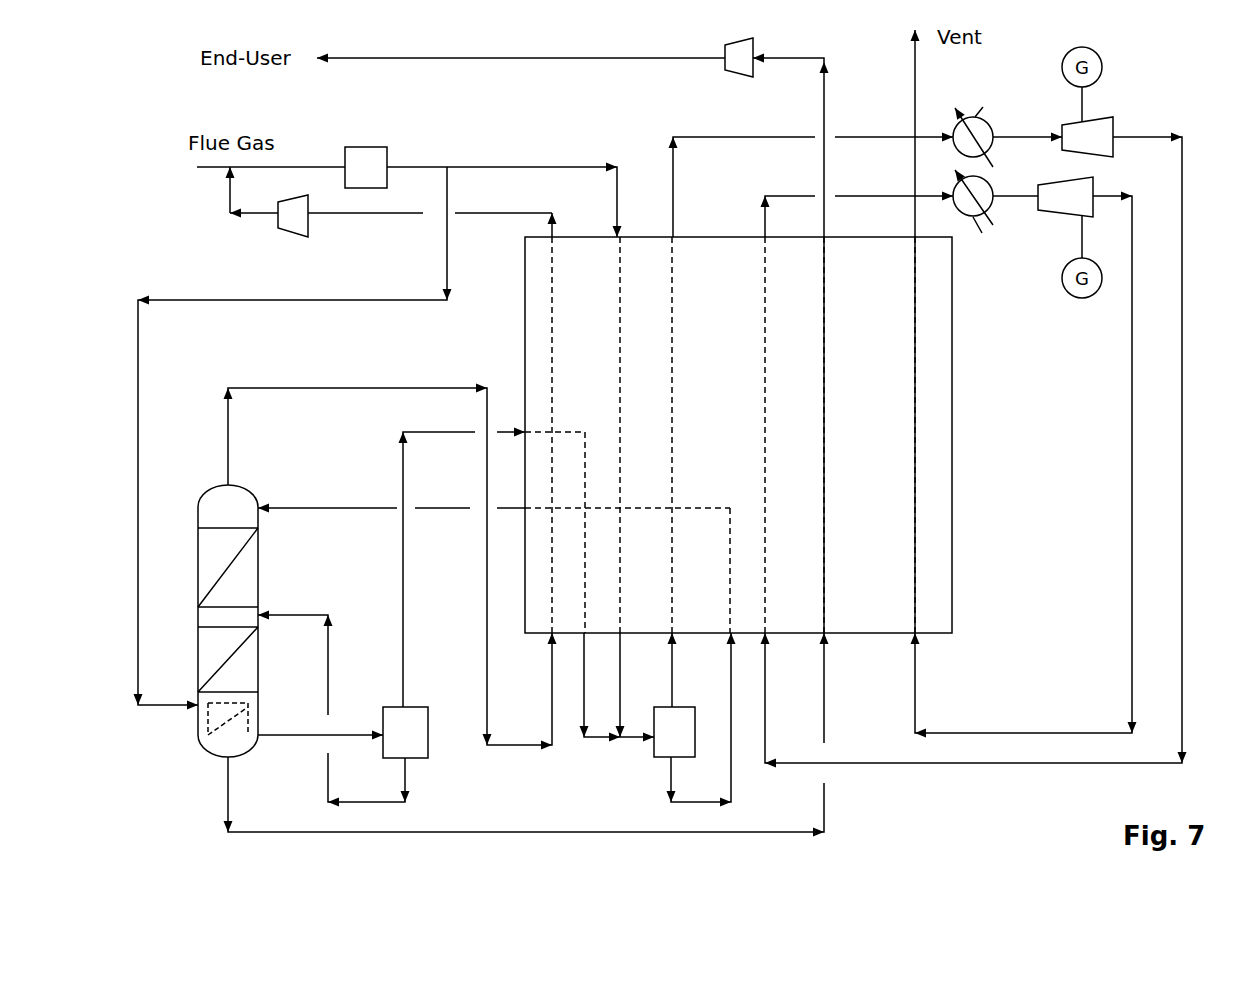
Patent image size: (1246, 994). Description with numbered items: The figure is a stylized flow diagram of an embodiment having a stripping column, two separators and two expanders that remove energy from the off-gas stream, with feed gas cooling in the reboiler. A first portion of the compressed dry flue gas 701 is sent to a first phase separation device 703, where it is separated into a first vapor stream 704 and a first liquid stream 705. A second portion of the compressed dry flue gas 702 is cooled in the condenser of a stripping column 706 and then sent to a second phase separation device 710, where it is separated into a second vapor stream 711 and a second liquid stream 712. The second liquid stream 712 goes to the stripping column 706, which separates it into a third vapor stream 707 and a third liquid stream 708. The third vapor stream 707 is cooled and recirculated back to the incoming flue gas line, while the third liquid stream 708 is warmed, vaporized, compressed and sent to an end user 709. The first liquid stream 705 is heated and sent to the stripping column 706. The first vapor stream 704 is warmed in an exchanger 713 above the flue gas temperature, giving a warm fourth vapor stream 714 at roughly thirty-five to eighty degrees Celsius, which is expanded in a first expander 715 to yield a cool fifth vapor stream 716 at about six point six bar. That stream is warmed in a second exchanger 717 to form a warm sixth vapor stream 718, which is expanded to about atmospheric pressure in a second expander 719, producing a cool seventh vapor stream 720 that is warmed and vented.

The first portion of the compressed dry flue gas 701 is at (504, 186).
The second portion of the compressed dry flue gas 702 is at (307, 438).
The first phase separation device 703 is at (674, 732).
The first vapor stream 704 is at (688, 670).
The first liquid stream 705 is at (683, 720).
The stripping column 706 is at (204, 621).
The third vapor stream 707 is at (390, 567).
The third liquid stream 708 is at (526, 735).
The end user 709 is at (573, 328).
The second phase separation device 710 is at (405, 732).
The second vapor stream 711 is at (445, 568).
The second liquid stream 712 is at (334, 709).
The exchanger 713 is at (985, 125).
The warm fourth vapor stream 714 is at (1027, 125).
The first expander 715 is at (1087, 137).
The cool fifth vapor stream 716 is at (998, 450).
The exchanger 717 is at (982, 214).
The warm sixth vapor stream 718 is at (1015, 209).
The second expander 719 is at (1065, 197).
The cool seventh vapor stream 720 is at (1043, 465).